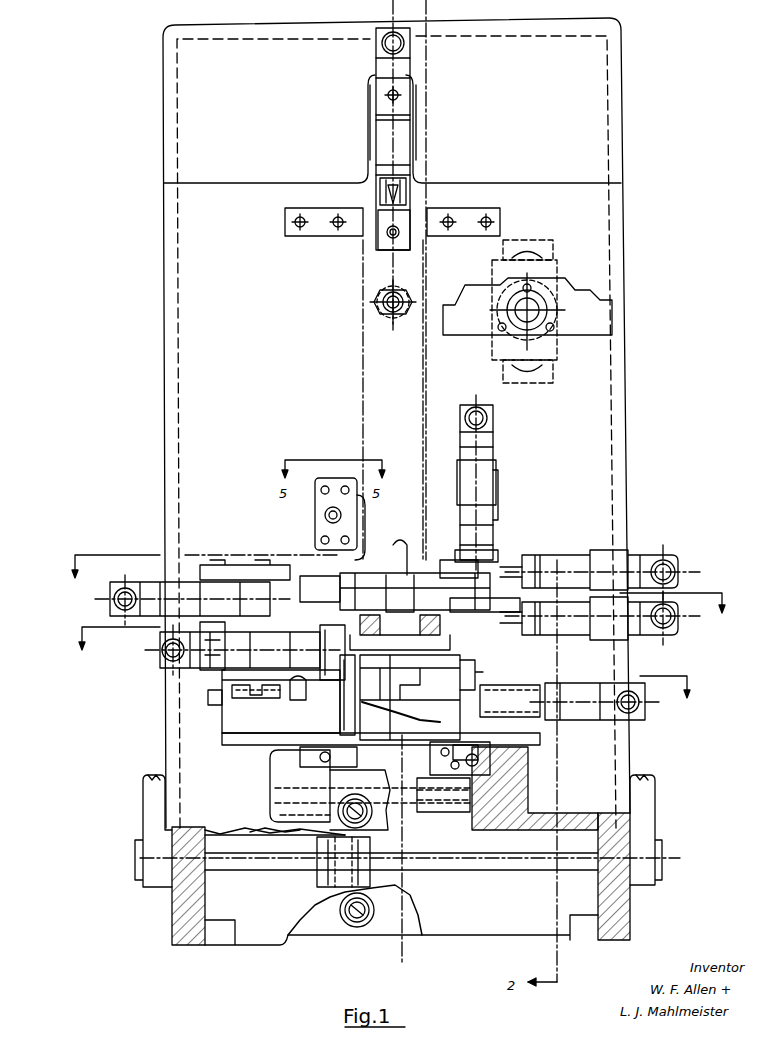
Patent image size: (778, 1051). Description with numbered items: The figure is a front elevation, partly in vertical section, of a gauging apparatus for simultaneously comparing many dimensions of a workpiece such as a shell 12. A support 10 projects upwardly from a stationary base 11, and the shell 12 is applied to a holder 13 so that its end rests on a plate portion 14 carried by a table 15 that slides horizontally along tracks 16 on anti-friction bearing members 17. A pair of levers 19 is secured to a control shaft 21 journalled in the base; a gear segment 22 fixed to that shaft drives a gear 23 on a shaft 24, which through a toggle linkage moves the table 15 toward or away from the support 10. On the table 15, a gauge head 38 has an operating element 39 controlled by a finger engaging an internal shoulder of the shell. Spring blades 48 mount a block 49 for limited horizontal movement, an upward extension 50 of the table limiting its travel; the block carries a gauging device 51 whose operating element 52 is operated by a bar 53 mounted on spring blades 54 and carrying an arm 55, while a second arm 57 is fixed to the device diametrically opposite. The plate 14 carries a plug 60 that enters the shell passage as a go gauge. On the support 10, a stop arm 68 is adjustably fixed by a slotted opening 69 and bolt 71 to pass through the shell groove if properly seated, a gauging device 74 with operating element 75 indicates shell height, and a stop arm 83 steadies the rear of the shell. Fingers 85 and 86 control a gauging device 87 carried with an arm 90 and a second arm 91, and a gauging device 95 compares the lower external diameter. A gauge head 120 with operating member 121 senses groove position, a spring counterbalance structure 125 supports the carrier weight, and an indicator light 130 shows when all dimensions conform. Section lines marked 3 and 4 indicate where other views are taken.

The support 10 is at (600, 53).
The stationary base 11 is at (625, 925).
The shell 12 is at (367, 352).
The holder 13 is at (340, 722).
The plate portion 14 is at (442, 632).
The table 15 is at (260, 742).
The tracks 16 is at (525, 762).
The anti-friction bearing members 17 is at (320, 768).
The levers 19 is at (150, 800).
The control shaft 21 is at (230, 870).
The gear segment 22 is at (380, 822).
The gear 23 is at (350, 838).
The shaft 24 is at (440, 812).
The gauge head 38 is at (607, 690).
The operating element 39 is at (490, 700).
The spring blades 48 is at (220, 700).
The block 49 is at (212, 718).
The upward extension 50 is at (285, 700).
The gauging device 51 is at (227, 657).
The operating element 52 is at (320, 578).
The bar 53 is at (415, 658).
The spring blades 54 is at (468, 668).
The arm 55 is at (418, 600).
The second arm 57 is at (382, 595).
The plug 60 is at (404, 572).
The stop arm 68 is at (345, 585).
The slotted opening 69 is at (328, 514).
The bolt 71 is at (328, 500).
The gauging device 74 is at (383, 148).
The operating element 75 is at (388, 198).
The stop arm 83 is at (388, 298).
The work engaging finger 85 is at (350, 590).
The work contacting portion 86 is at (490, 525).
The gauging device 87 is at (636, 553).
The arm 90 is at (318, 538).
The second arm 91 is at (453, 575).
The gauging device 95 is at (690, 600).
The gauge head 120 is at (485, 480).
The operating member 121 is at (490, 596).
The spring counterbalance structure 125 is at (203, 630).
The indicator light 130 is at (530, 308).
The section line 3- 3 is at (397, 592).
The section line 4- 4 is at (382, 673).